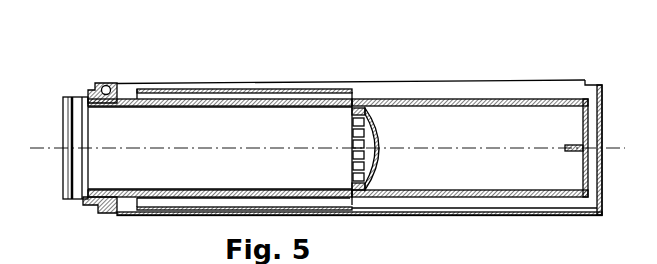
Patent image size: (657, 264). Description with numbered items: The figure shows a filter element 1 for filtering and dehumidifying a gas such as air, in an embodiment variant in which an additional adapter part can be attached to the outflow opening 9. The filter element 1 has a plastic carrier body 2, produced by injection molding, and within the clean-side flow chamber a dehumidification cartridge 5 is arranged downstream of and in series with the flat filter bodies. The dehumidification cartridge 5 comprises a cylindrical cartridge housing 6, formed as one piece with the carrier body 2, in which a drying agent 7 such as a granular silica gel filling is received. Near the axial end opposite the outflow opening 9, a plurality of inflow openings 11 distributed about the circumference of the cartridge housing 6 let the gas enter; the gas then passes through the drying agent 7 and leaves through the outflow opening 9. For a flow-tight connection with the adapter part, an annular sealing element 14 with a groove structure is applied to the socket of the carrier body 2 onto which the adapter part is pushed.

The filter element 1 is at (323, 43).
The carrier body 2 is at (432, 93).
The dehumidification cartridge 5 is at (270, 100).
The cartridge housing 6 is at (297, 100).
The drying agent 7 is at (222, 127).
The outflow opening 9 is at (62, 167).
The inflow openings 11 is at (351, 149).
The sealing element 14 is at (91, 97).